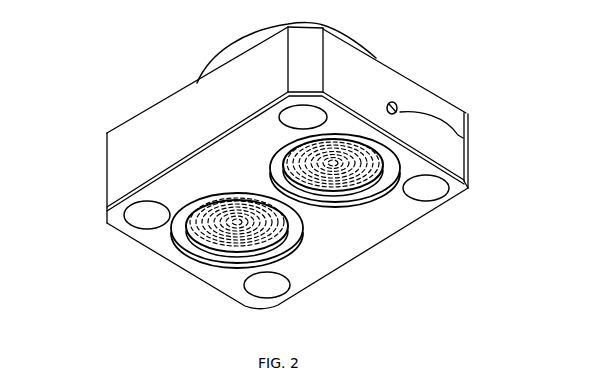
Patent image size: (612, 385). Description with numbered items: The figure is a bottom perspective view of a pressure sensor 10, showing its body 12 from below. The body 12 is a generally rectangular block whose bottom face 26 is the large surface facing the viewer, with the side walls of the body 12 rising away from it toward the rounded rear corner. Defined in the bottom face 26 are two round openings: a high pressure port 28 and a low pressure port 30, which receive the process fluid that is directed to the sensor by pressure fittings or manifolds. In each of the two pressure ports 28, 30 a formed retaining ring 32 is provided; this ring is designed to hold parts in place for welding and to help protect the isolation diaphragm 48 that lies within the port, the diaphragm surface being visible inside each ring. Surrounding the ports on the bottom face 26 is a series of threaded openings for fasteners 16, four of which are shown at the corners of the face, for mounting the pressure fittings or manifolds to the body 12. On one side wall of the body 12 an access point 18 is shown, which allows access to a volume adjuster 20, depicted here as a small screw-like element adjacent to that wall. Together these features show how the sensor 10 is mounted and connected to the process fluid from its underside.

The pressure sensor 10 is at (497, 86).
The body 12 is at (142, 160).
The threaded openings for fasteners 16 is at (310, 118).
The access points 18 is at (463, 120).
The volume adjusters 20 is at (394, 106).
The bottom face 26 is at (240, 172).
The high pressure port 28 is at (196, 266).
The low pressure port 30 is at (358, 179).
The formed retaining ring 32 is at (203, 258).
The isolation diaphragm 48 is at (383, 198).